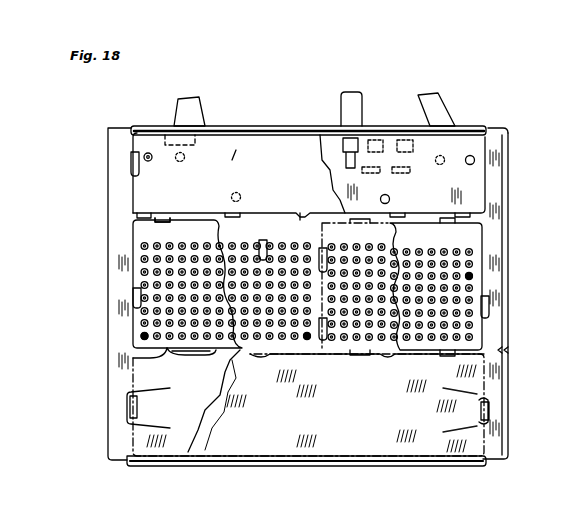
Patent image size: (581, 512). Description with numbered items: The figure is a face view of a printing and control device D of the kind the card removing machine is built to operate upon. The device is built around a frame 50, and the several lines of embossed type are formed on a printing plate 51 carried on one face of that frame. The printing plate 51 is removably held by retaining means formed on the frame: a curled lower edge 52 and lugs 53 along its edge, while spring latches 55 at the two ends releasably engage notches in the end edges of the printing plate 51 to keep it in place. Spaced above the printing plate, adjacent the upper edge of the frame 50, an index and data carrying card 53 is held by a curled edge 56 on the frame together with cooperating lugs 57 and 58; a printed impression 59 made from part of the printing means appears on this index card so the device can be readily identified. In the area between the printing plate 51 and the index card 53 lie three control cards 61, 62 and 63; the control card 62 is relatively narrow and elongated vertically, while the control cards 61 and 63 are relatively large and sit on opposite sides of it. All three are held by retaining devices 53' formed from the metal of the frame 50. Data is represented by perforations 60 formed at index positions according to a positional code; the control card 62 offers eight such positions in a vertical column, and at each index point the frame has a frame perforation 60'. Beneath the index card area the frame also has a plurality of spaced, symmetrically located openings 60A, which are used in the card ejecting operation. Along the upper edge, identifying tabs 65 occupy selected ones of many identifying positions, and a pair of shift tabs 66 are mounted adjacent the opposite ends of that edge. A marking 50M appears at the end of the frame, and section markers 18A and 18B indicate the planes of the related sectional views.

The frame 50 is at (497, 204).
The housing wall 50M is at (504, 350).
The printing plate 51 is at (290, 458).
The curled lower edge 52 is at (246, 466).
The index and data carrying card 53 is at (276, 176).
The retaining devices 53' is at (303, 292).
The spring latches 55 is at (128, 408).
The curled edge 56 is at (262, 128).
The lug 57 is at (131, 175).
The lug 58 is at (146, 216).
The printed impression 59 is at (228, 160).
The perforations 60 is at (306, 325).
The frame perforation 60' is at (306, 284).
The openings 60A is at (146, 149).
The control card 61 is at (143, 240).
The control card 62 is at (288, 352).
The control card 63 is at (462, 234).
The identifying tabs 65 is at (343, 100).
The shift tabs 66 is at (185, 103).
The printing and control device D is at (99, 240).
The section line 18A is at (110, 326).
The section line 18B is at (362, 77).